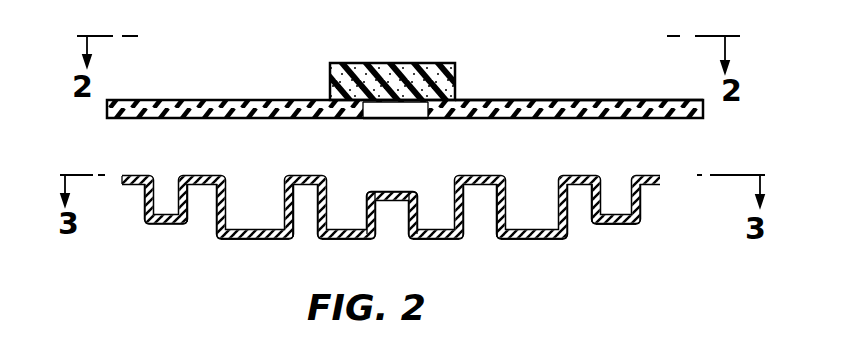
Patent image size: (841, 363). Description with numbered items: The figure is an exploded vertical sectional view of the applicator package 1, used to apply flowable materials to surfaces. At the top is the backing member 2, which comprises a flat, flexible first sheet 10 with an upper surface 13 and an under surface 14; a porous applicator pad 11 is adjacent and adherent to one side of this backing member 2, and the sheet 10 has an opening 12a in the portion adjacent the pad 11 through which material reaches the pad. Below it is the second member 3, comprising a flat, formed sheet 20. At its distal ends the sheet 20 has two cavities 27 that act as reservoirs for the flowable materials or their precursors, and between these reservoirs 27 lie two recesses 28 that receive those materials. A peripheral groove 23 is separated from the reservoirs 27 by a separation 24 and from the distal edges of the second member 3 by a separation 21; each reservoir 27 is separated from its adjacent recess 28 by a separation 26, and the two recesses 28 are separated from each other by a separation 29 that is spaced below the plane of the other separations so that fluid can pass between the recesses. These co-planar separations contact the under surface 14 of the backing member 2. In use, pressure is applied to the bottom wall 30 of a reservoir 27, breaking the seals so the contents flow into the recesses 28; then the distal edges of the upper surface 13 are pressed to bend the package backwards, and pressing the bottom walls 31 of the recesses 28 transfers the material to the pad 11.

The applicator package 1 is at (100, 105).
The backing member 2 is at (522, 74).
The second member 3 is at (636, 243).
The first sheet 10 is at (620, 100).
The porous applicator pad 11 is at (386, 70).
The aperture 12a is at (400, 112).
The upper surface 13 is at (178, 100).
The under surface 14 is at (180, 119).
The formed sheet 20 is at (650, 175).
The separation 21 is at (132, 185).
The groove 23 is at (167, 182).
The separation 24 is at (205, 193).
The separation 26 is at (303, 187).
The cavity 27 is at (242, 192).
The recess 28 is at (427, 198).
The separation 29 is at (390, 205).
The bottom wall 30 is at (253, 240).
The bottom wall 31 is at (347, 238).